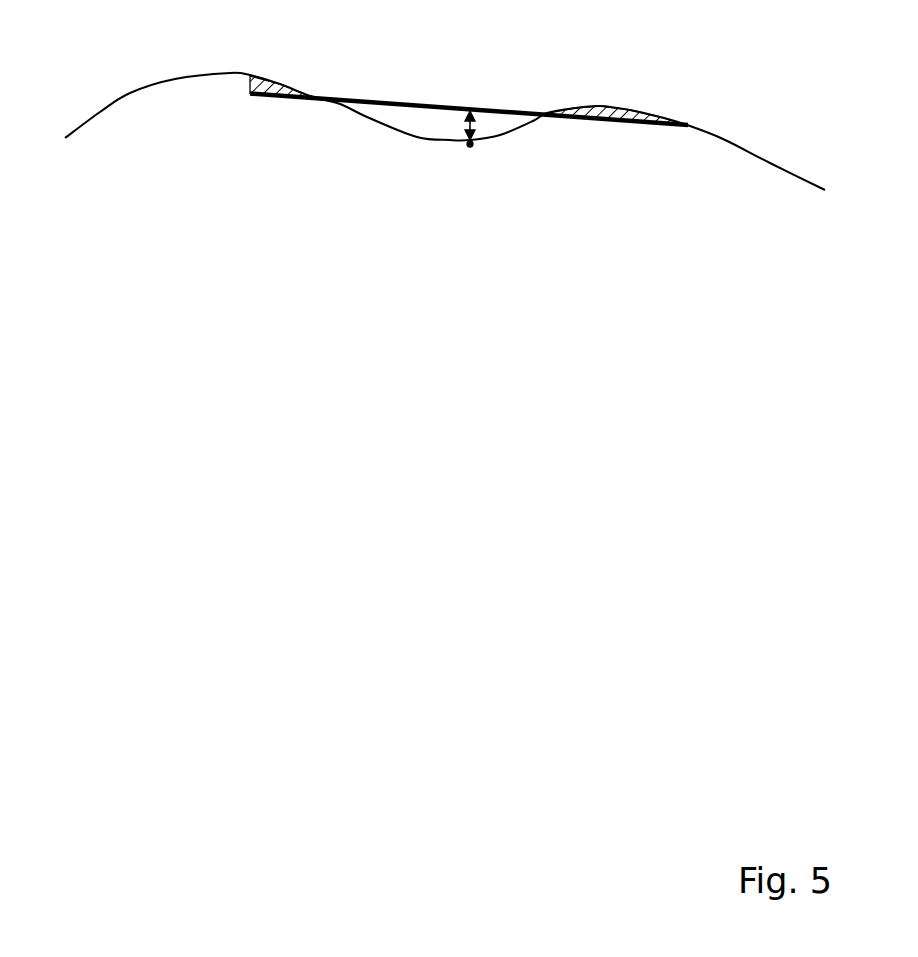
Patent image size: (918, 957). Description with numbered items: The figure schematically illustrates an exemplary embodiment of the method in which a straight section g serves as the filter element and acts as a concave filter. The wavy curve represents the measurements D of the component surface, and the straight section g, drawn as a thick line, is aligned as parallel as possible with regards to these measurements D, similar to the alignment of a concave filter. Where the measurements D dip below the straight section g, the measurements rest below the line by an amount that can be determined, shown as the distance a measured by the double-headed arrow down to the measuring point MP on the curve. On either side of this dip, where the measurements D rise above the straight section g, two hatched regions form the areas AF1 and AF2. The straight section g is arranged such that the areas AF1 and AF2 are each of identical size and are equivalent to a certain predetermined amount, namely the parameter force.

The measurements D is at (130, 92).
The straight section g is at (515, 108).
The distance a is at (463, 111).
The area AF1 is at (273, 93).
The area AF2 is at (610, 122).
The measuring point MP is at (480, 153).